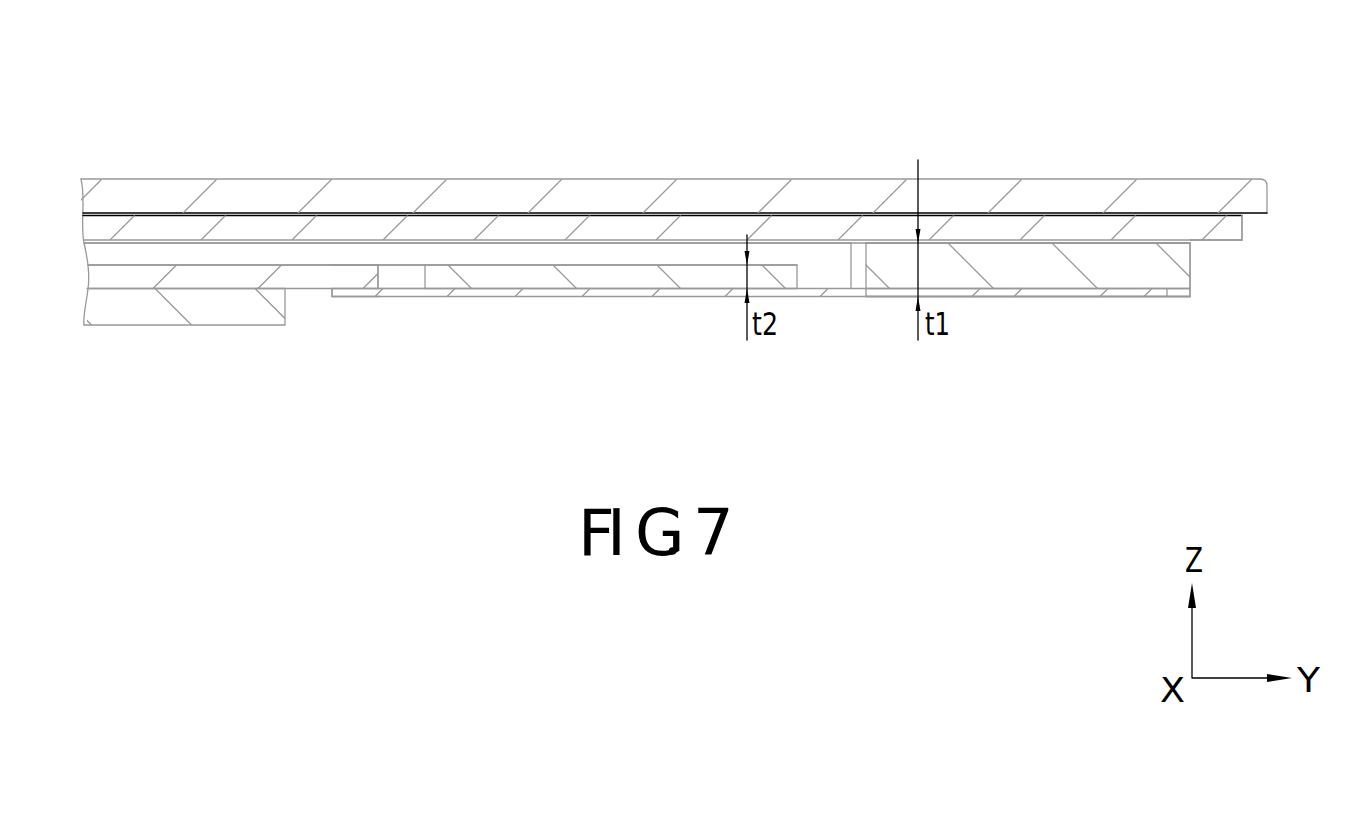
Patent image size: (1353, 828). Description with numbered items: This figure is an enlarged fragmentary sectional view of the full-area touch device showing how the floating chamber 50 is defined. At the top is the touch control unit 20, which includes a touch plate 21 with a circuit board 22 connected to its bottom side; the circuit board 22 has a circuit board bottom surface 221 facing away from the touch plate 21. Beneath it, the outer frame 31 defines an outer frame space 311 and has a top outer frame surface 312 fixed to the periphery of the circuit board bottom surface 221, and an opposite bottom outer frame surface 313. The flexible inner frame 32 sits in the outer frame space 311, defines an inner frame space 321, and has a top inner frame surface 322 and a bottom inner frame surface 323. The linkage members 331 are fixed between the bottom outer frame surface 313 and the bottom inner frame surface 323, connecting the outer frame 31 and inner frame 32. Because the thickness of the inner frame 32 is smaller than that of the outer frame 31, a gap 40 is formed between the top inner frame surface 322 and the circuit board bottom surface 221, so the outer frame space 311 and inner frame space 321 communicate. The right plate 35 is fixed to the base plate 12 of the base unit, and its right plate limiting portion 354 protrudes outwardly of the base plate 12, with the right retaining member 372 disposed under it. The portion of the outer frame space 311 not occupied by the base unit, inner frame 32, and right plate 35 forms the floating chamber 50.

The base plate 12 is at (150, 312).
The touch control unit 20 is at (695, 220).
The touch plate 21 is at (1035, 195).
The circuit board 22 is at (703, 237).
The circuit board bottom surface 221 is at (1227, 243).
The outer frame 31 is at (1009, 343).
The outer frame space 311 is at (828, 271).
The top outer frame surface 312 is at (1126, 243).
The bottom outer frame surface 313 is at (975, 291).
The inner frame 32 is at (599, 346).
The inner frame space 321 is at (404, 275).
The top inner frame surface 322 is at (633, 268).
The bottom inner frame surface 323 is at (599, 359).
The linkage members 331 is at (1017, 291).
The right plate 35 is at (241, 166).
The right plate limiting portion 354 is at (355, 277).
The right retaining member 372 is at (357, 297).
The gap 40 is at (537, 253).
The floating chamber 50 is at (249, 255).